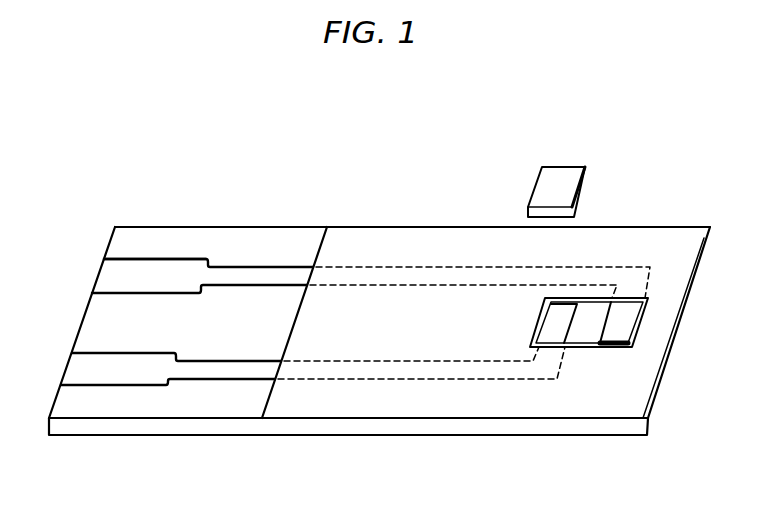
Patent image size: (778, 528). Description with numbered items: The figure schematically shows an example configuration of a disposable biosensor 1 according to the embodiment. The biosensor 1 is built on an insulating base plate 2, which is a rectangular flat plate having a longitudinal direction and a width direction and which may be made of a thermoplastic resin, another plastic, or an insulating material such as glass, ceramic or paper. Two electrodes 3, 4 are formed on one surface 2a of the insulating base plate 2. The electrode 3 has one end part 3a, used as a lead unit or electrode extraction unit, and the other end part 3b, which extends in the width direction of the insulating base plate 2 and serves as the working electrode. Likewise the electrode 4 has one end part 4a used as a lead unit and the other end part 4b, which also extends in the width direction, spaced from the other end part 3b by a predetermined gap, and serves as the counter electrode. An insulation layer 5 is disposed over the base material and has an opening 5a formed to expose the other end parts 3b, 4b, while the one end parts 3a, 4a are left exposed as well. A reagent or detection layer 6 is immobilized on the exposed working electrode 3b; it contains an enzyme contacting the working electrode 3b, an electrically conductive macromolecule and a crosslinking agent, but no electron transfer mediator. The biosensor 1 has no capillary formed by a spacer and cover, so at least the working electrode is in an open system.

The biosensor 1 is at (637, 138).
The insulating base plate 2 is at (110, 325).
The one surface of the insulating base plate 2a is at (195, 246).
The electrode 3 is at (328, 381).
The one end part of electrode 3 3a is at (102, 378).
The other end part of electrode 3 (working electrode) 3b is at (560, 333).
The electrode 4 is at (277, 263).
The one end part of electrode 4 4a is at (133, 275).
The other end part of electrode 4 (counter electrode) 4b is at (643, 325).
The insulation layer 5 is at (367, 243).
The opening 5a is at (612, 348).
The reagent layer (detection layer) 6 is at (563, 176).